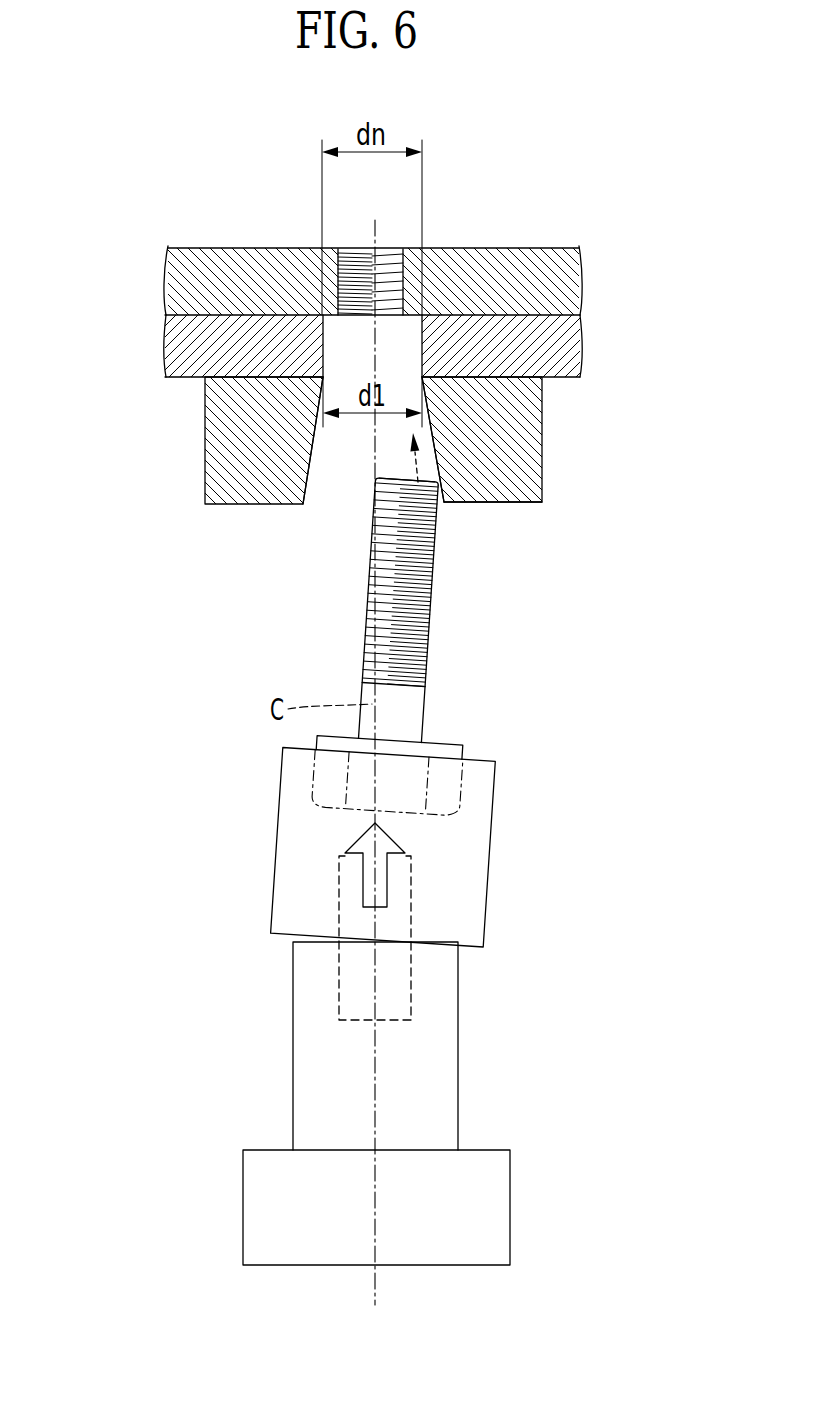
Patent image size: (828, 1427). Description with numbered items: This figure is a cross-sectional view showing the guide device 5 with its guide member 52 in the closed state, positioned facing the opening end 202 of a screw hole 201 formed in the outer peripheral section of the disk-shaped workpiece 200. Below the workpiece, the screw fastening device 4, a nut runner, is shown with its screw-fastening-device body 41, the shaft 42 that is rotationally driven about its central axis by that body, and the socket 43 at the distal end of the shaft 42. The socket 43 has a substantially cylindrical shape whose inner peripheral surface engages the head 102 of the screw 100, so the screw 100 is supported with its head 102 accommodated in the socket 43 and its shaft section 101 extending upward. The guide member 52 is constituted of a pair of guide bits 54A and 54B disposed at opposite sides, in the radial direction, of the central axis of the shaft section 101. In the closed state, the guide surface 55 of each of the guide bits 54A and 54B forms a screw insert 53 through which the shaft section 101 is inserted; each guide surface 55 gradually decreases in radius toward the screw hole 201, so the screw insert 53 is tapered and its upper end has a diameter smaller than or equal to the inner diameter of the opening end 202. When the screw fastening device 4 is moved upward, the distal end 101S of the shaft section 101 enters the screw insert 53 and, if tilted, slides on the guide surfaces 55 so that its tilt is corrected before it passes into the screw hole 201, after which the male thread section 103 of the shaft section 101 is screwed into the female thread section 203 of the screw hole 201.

The screw fastening device 4 is at (559, 1128).
The screw-fastening-device body 41 is at (510, 1205).
The shaft 42 is at (460, 1070).
The socket 43 is at (488, 878).
The guide device 5 is at (578, 403).
The guide member 52 is at (559, 489).
The screw insert 53 is at (337, 508).
The guide bit 54A is at (205, 423).
The guide bit 54B is at (542, 434).
The guide surface 55 is at (308, 487).
The screw 100 is at (449, 726).
The shaft section 101 is at (430, 703).
The distal end 101S is at (442, 487).
The head 102 is at (462, 780).
The male thread section 103 is at (432, 573).
The workpiece 200 is at (533, 228).
The screw hole 201 is at (397, 249).
The opening end 202 is at (316, 336).
The female thread section 203 is at (358, 250).